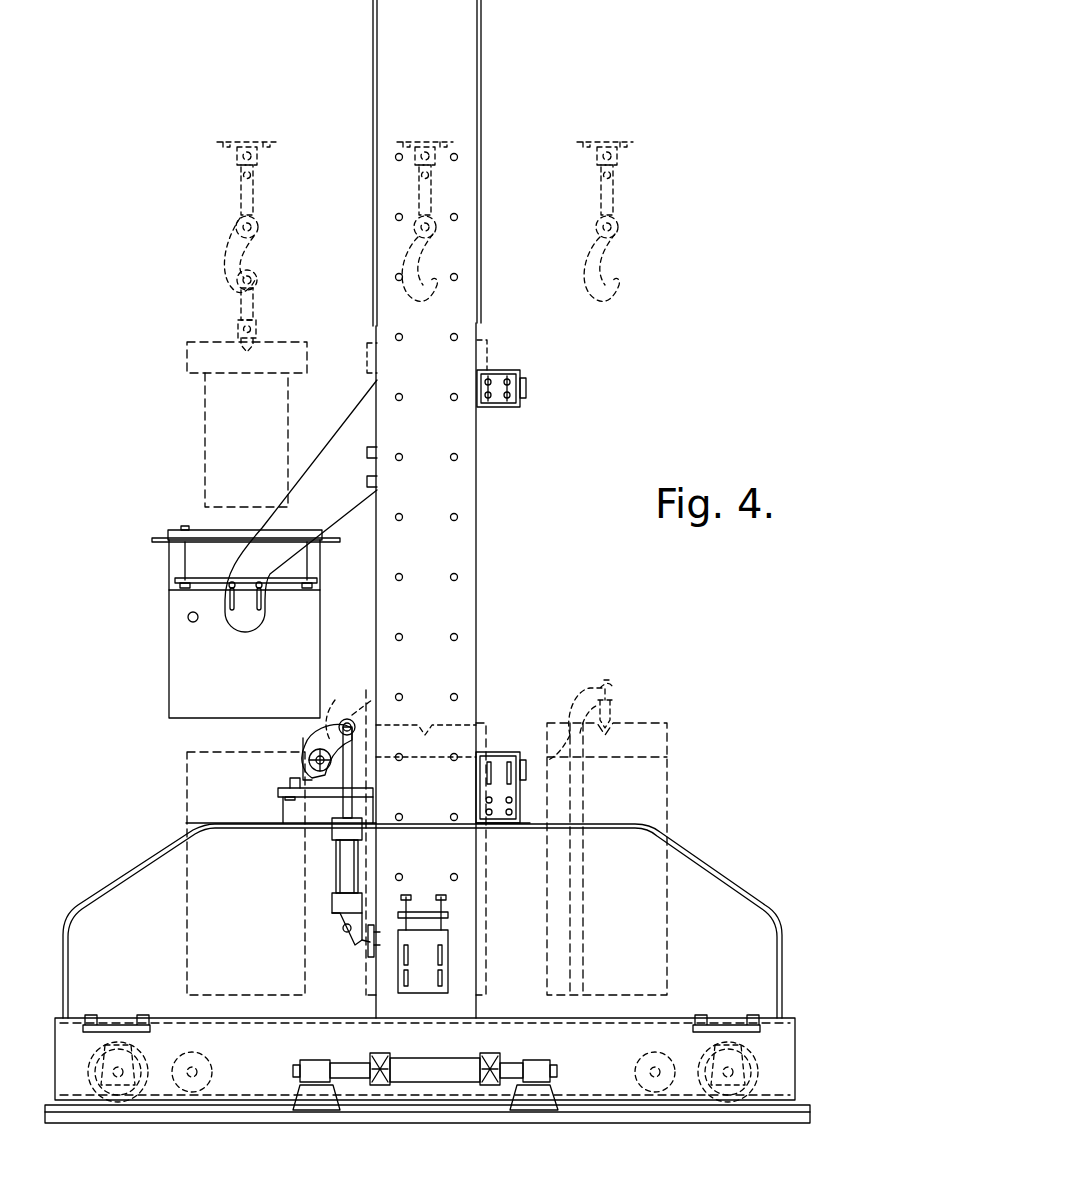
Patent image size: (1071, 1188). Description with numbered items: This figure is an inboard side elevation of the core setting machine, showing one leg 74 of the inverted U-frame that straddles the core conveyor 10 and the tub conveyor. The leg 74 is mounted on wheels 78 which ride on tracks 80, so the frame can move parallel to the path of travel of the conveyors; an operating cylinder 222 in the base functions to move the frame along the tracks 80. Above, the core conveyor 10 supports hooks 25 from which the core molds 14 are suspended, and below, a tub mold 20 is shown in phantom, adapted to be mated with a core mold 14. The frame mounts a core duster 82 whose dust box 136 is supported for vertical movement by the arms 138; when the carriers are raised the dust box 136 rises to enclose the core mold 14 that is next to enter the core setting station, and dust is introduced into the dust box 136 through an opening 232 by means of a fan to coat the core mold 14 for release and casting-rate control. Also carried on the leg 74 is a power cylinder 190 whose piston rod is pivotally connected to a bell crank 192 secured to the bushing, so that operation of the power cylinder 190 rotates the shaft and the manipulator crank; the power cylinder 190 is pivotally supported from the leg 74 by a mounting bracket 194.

The core conveyor 10 is at (236, 160).
The hook 25 is at (230, 250).
The core mold 14 is at (205, 447).
The arm 138 is at (338, 428).
The core duster 82 is at (146, 556).
The opening 232 is at (187, 617).
The dust box 136 is at (170, 652).
The bell crank 192 is at (350, 725).
The power cylinder 190 is at (332, 872).
The mounting bracket 194 is at (355, 944).
The tub mold 20 is at (668, 786).
The leg 74 is at (481, 55).
The wheel 78 is at (758, 1048).
The track 80 is at (818, 1080).
The operating cylinder 222 is at (455, 1045).